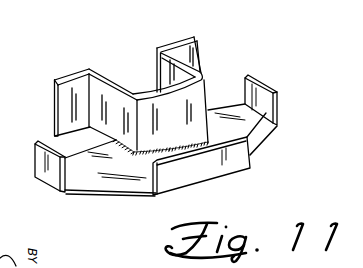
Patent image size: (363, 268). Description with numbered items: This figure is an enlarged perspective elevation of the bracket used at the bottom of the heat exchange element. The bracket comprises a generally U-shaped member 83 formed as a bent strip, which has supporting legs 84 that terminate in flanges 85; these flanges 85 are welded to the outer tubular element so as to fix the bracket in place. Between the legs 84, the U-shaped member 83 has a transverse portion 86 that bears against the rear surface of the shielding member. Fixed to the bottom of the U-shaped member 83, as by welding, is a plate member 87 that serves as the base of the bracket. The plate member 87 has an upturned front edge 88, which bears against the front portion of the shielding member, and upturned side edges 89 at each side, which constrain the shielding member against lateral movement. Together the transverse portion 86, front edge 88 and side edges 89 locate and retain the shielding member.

The generally U-shaped member 83 is at (68, 78).
The supporting legs 84 is at (163, 70).
The flanges 85 is at (62, 103).
The transverse portion 86 is at (200, 95).
The plate member 87 is at (118, 183).
The upturned front edge 88 is at (210, 164).
The upturned side edges 89 is at (46, 160).